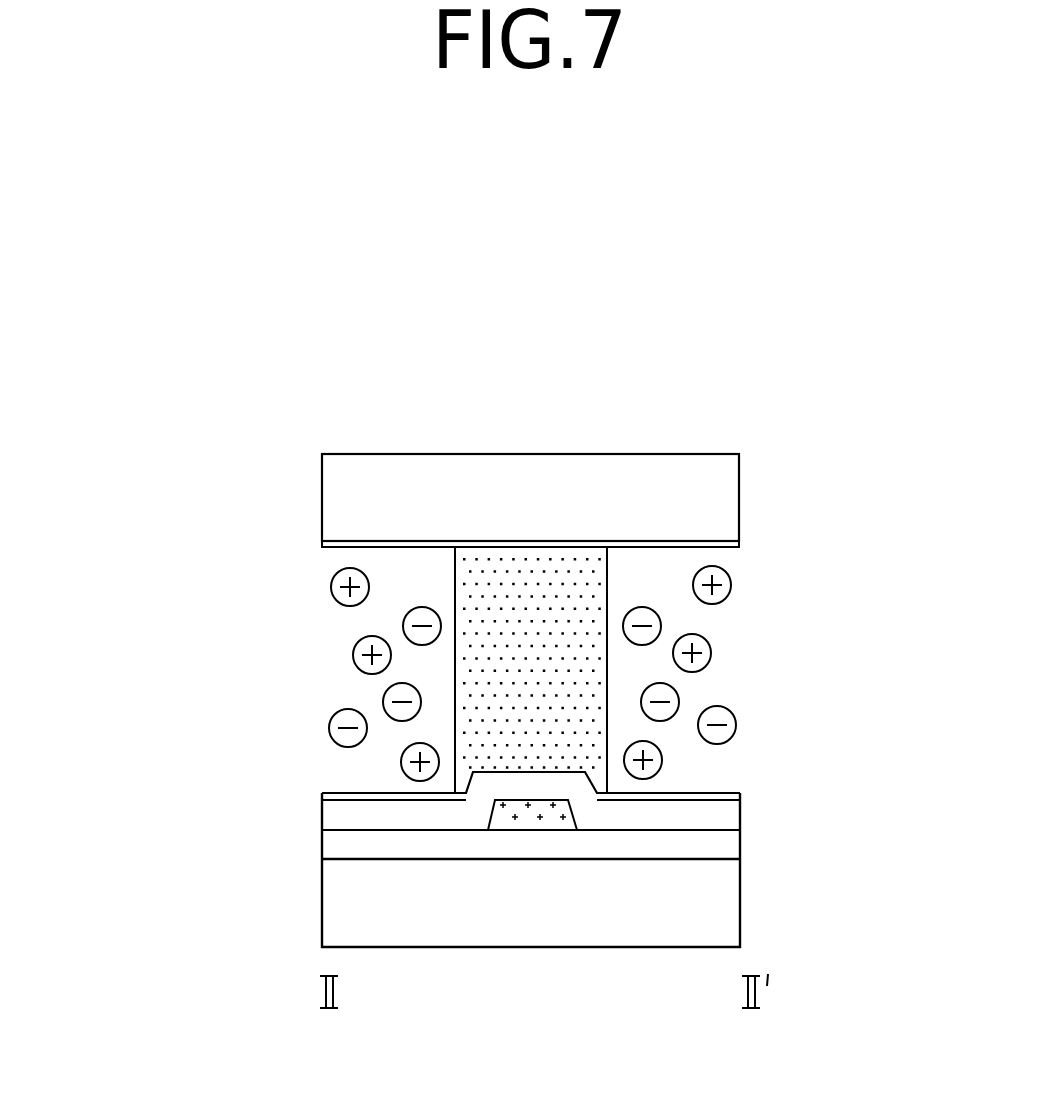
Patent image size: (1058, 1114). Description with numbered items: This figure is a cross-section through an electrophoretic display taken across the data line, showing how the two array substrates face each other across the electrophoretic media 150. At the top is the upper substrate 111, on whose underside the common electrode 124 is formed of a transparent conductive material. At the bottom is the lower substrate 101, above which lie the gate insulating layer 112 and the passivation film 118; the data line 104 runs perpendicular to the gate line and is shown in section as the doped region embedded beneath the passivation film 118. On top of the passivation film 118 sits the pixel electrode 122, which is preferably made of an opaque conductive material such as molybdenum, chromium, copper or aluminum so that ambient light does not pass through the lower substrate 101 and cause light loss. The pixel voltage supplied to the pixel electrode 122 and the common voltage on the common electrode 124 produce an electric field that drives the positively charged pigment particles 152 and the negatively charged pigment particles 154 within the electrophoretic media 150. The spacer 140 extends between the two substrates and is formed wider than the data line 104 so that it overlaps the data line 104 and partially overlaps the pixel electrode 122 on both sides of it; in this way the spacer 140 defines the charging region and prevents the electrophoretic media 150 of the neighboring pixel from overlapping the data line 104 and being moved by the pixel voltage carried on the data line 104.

The lower substrate 101 is at (740, 905).
The data line 104 is at (531, 818).
The upper substrate 111 is at (737, 500).
The gate insulating layer 112 is at (740, 845).
The passivation film 118 is at (740, 818).
The pixel electrode 122 is at (322, 800).
The common electrode 124 is at (737, 547).
The spacer 140 is at (547, 560).
The electrophoretic media 150 is at (389, 673).
The positively charged pigment particles 152 is at (353, 655).
The negatively charged pigment particles 154 is at (329, 728).